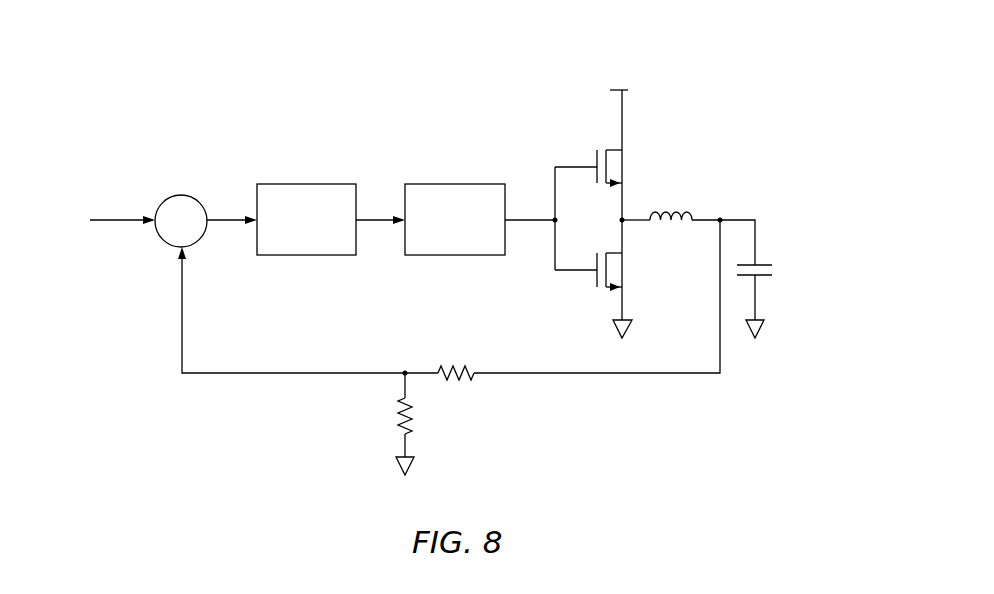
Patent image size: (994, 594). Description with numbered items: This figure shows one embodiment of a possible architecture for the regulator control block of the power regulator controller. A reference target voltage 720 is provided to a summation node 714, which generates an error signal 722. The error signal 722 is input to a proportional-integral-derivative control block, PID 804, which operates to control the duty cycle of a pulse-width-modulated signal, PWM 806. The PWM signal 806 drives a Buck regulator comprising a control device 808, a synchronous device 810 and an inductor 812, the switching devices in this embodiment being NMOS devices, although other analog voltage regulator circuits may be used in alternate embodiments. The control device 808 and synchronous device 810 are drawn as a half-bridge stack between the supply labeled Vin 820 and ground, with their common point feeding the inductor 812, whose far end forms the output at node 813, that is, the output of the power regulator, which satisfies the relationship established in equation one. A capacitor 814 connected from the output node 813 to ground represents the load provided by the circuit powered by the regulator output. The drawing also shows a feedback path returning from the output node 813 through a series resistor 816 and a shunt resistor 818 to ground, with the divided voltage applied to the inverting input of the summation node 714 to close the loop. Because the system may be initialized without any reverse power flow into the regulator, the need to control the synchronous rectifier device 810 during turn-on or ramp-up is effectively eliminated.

The reference target voltage 720 is at (120, 220).
The summation node 714 is at (192, 195).
The error signal 722 is at (223, 218).
The proportional-integral-derivative (PID) control block 804 is at (309, 184).
The pulse-width-modulated (PWM) signal 806 is at (458, 184).
The control device 808 is at (619, 147).
The synchronous device 810 is at (618, 252).
The inductor 812 is at (673, 208).
The output node 813 is at (721, 218).
The capacitor 814 is at (760, 265).
The feedback resistor 816 is at (462, 366).
The feedback divider resistor 818 is at (411, 418).
The input voltage supply Vin 820 is at (621, 62).